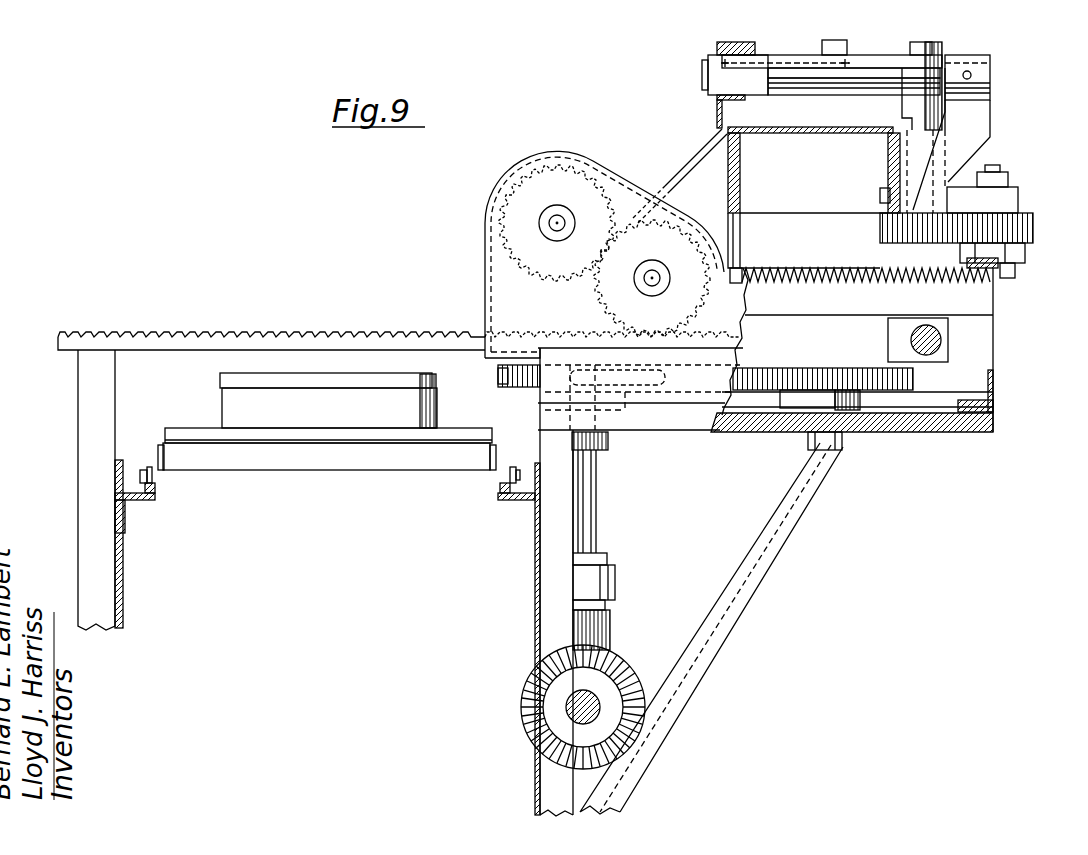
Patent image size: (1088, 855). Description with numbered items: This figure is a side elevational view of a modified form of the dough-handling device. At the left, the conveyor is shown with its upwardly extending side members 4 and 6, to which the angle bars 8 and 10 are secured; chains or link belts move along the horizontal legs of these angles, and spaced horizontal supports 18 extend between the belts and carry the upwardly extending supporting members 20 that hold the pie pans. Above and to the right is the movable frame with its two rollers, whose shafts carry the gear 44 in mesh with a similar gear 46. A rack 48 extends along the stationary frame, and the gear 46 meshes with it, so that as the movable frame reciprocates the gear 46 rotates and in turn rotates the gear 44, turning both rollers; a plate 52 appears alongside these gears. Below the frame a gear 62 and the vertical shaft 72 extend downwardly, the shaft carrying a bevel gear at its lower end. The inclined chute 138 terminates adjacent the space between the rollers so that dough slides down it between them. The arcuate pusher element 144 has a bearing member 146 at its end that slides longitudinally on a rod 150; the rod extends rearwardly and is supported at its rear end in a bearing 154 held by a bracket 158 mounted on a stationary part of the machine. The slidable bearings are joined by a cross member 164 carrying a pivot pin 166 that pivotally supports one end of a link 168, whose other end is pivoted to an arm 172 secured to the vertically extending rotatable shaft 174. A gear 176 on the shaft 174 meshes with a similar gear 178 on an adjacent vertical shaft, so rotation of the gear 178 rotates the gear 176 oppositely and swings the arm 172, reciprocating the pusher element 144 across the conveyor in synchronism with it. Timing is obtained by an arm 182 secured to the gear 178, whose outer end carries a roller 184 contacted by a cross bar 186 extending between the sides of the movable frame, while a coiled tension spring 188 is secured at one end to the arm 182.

The side member 4 is at (124, 578).
The side member 6 is at (535, 613).
The angle bar 8 is at (143, 502).
The angle bar 10 is at (510, 504).
The horizontal support 18 is at (292, 462).
The supporting member 20 is at (221, 400).
The gear 44 is at (488, 232).
The gear 46 is at (596, 297).
The rack 48 is at (184, 332).
The cover plate 52 is at (498, 292).
The gear 62 is at (760, 368).
The vertical shaft 72 is at (597, 506).
The inclined chute 138 is at (696, 163).
The pusher element 144 is at (717, 113).
The bearing member 146 is at (708, 58).
The rod 150 is at (781, 90).
The bearing 154 is at (990, 58).
The bracket 158 is at (990, 120).
The cross member 164 is at (752, 52).
The pivot pin 166 is at (725, 44).
The link 168 is at (813, 66).
The arm 172 is at (878, 52).
The rotatable shaft 174 is at (938, 42).
The gear 176 is at (885, 228).
The gear 178 is at (1048, 226).
The arm 182 is at (1025, 250).
The roller 184 is at (1016, 270).
The cross bar 186 is at (965, 264).
The coiled tension spring 188 is at (858, 282).